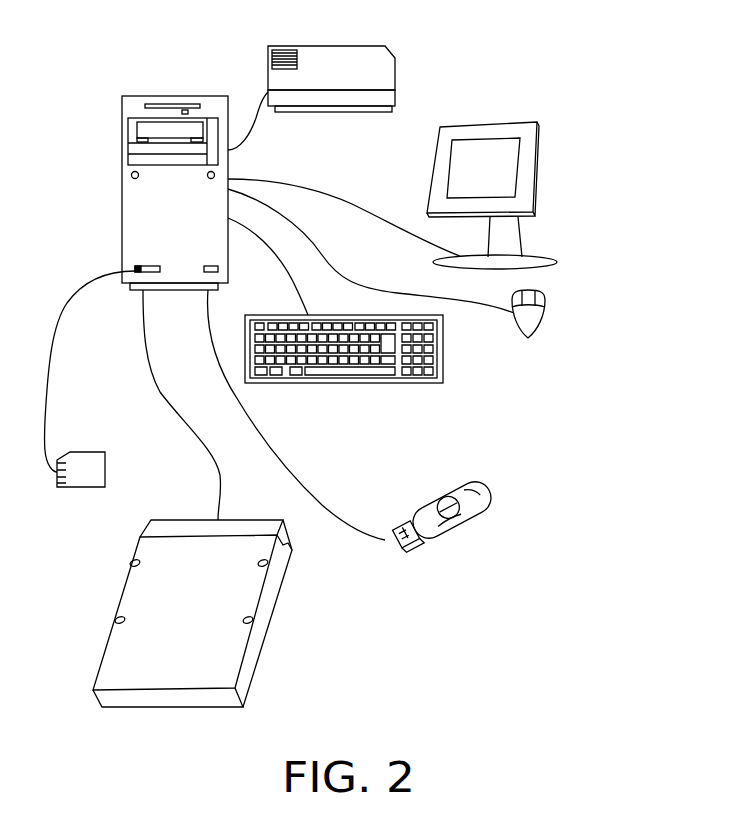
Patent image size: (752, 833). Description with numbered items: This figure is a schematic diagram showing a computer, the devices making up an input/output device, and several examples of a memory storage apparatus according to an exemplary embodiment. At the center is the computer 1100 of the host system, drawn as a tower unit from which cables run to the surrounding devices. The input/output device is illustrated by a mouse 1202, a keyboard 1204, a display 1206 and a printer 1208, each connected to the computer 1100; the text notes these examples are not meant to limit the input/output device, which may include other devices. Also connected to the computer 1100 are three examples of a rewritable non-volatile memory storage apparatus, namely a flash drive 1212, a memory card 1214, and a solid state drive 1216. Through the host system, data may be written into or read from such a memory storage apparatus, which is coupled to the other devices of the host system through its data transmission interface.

The computer 1100 is at (178, 96).
The printer 1208 is at (327, 46).
The display 1206 is at (492, 122).
The mouse 1202 is at (547, 313).
The keyboard 1204 is at (443, 360).
The memory card 1214 is at (105, 460).
The solid state drive 1216 is at (240, 510).
The flash drive 1212 is at (432, 503).